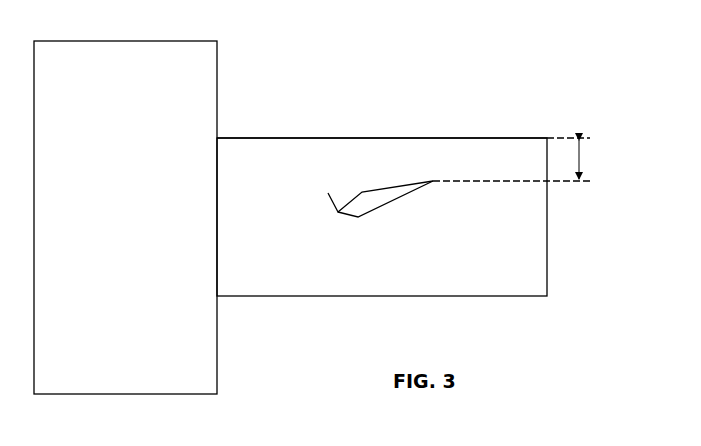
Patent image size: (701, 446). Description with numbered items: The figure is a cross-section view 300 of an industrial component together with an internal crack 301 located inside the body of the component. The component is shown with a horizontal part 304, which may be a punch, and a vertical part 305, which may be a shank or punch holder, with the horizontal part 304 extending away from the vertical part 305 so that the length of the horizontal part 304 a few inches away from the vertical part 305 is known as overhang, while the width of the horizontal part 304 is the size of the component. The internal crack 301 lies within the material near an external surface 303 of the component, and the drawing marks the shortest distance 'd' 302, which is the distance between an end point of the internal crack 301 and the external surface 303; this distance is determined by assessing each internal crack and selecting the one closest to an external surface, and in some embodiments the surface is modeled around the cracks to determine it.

The cross-section view 300 is at (544, 28).
The internal crack 301 is at (327, 204).
The shortest distance 'd' 302 is at (607, 158).
The external surface 303 is at (382, 112).
The horizontal part 304 is at (247, 135).
The vertical part 305 is at (177, 39).